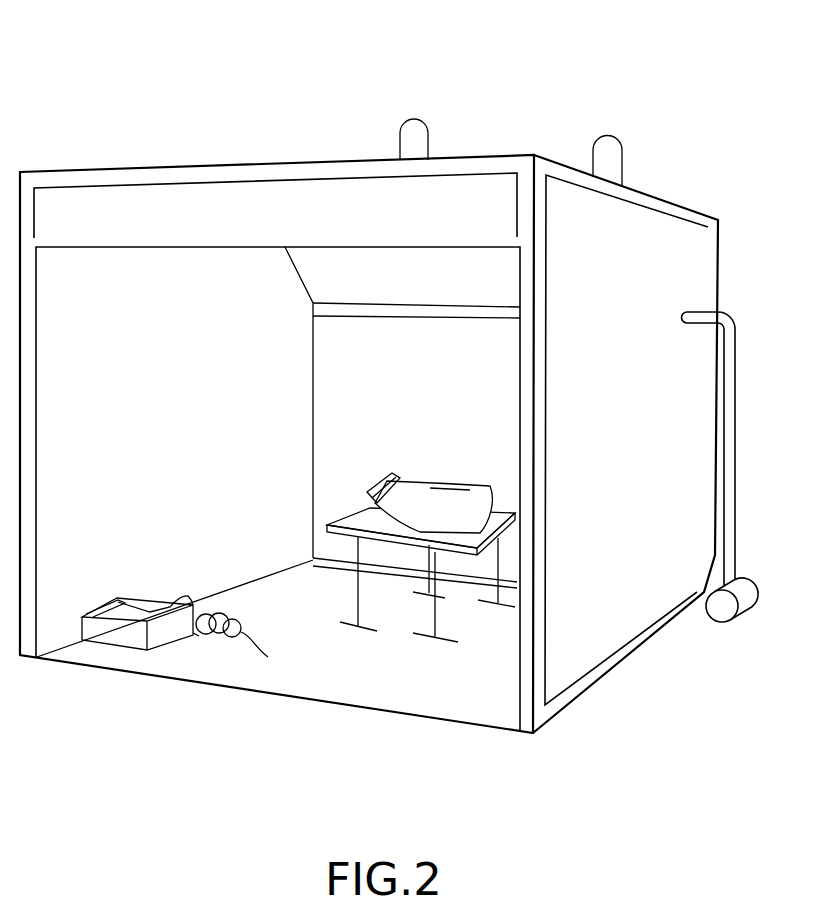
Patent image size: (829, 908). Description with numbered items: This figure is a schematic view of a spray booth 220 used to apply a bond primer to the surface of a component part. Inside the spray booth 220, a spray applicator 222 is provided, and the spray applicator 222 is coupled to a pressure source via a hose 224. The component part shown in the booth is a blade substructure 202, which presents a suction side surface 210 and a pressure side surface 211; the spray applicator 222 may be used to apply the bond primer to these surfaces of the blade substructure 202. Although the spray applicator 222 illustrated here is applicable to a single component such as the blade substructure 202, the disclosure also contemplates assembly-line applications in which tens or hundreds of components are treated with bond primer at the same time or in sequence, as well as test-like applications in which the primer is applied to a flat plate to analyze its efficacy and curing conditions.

The spray booth 220 is at (120, 110).
The blade substructure 202 is at (418, 489).
The suction side surface 210 is at (461, 516).
The pressure side surface 211 is at (437, 500).
The spray applicator 222 is at (122, 601).
The hose 224 is at (253, 650).